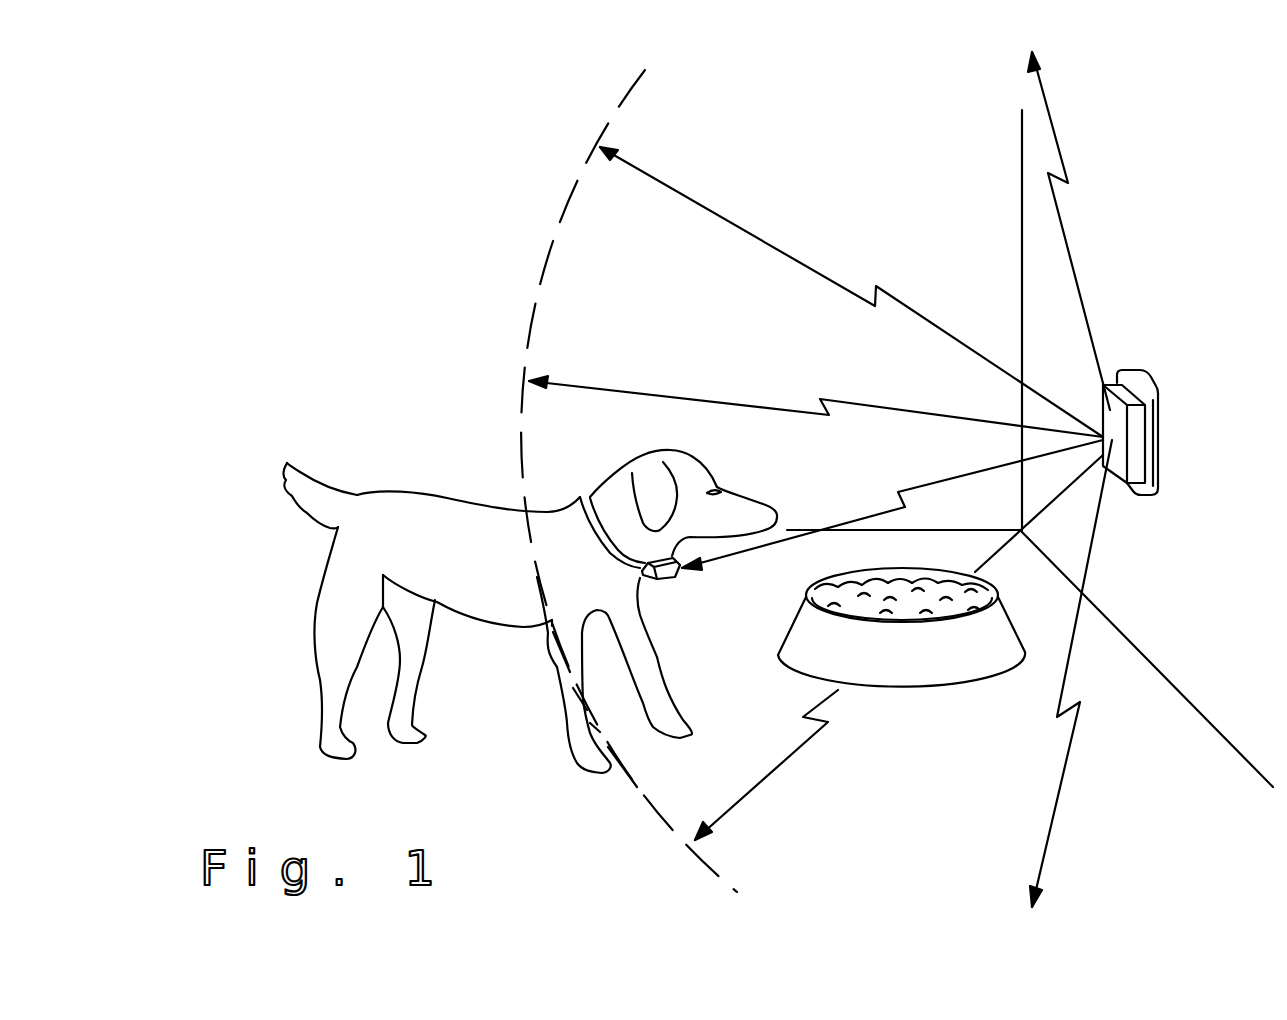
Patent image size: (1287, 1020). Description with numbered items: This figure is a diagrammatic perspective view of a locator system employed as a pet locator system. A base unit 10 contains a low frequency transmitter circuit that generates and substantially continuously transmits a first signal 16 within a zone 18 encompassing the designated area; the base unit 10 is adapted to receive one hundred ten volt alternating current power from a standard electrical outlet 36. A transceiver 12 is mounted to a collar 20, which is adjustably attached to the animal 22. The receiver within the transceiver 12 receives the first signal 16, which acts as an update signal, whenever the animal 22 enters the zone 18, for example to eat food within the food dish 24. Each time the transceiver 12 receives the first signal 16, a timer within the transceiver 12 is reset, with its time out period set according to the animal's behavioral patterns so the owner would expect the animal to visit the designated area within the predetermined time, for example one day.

The base unit 10 is at (1127, 395).
The transceiver 12 is at (670, 573).
The first signal 16 is at (1096, 558).
The zone 18 is at (750, 320).
The collar 20 is at (577, 497).
The animal 22 is at (413, 500).
The food dish 24 is at (948, 658).
The standard electrical outlet 36 is at (1152, 440).